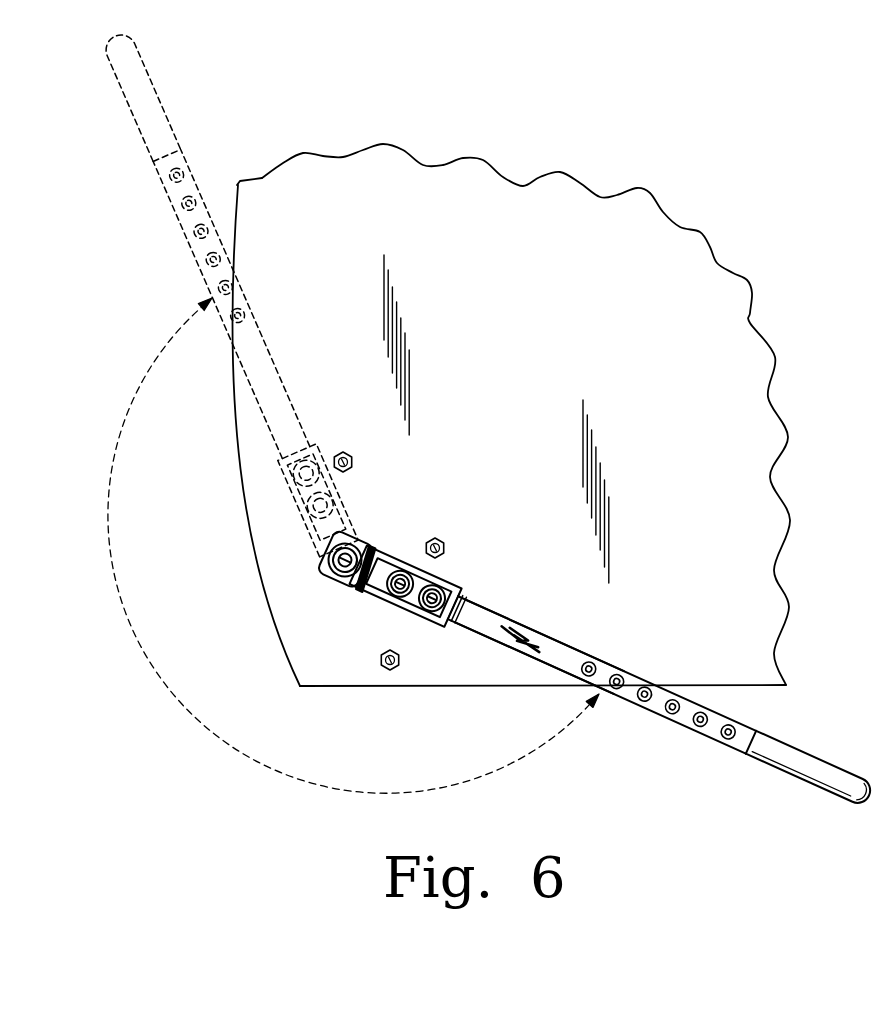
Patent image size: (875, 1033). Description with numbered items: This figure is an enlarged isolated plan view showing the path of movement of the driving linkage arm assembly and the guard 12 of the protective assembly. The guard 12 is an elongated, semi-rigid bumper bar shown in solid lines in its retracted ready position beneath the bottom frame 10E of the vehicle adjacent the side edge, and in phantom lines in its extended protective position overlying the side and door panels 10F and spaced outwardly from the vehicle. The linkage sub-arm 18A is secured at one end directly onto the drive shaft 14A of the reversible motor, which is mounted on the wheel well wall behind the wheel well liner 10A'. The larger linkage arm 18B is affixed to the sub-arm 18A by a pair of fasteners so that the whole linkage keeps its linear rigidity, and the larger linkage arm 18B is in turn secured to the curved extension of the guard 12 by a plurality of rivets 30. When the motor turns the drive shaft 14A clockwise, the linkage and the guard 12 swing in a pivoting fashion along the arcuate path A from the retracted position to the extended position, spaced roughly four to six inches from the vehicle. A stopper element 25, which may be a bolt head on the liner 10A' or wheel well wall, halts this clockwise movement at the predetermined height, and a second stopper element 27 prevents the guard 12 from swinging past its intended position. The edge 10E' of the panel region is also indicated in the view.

The wheel well liner 10A' is at (526, 414).
The side and door panels 10F is at (240, 188).
The bottom frame 10E is at (543, 722).
The plate side edge 10E' is at (288, 471).
The stopper element 25 is at (347, 452).
The second stopper element 27 is at (438, 538).
The drive shaft 14A is at (361, 541).
The linkage sub-arm 18A is at (363, 598).
The larger linkage arm 18B is at (507, 618).
The rivets 30 is at (698, 724).
The guard 12 is at (836, 812).
The arcuate path A is at (108, 550).